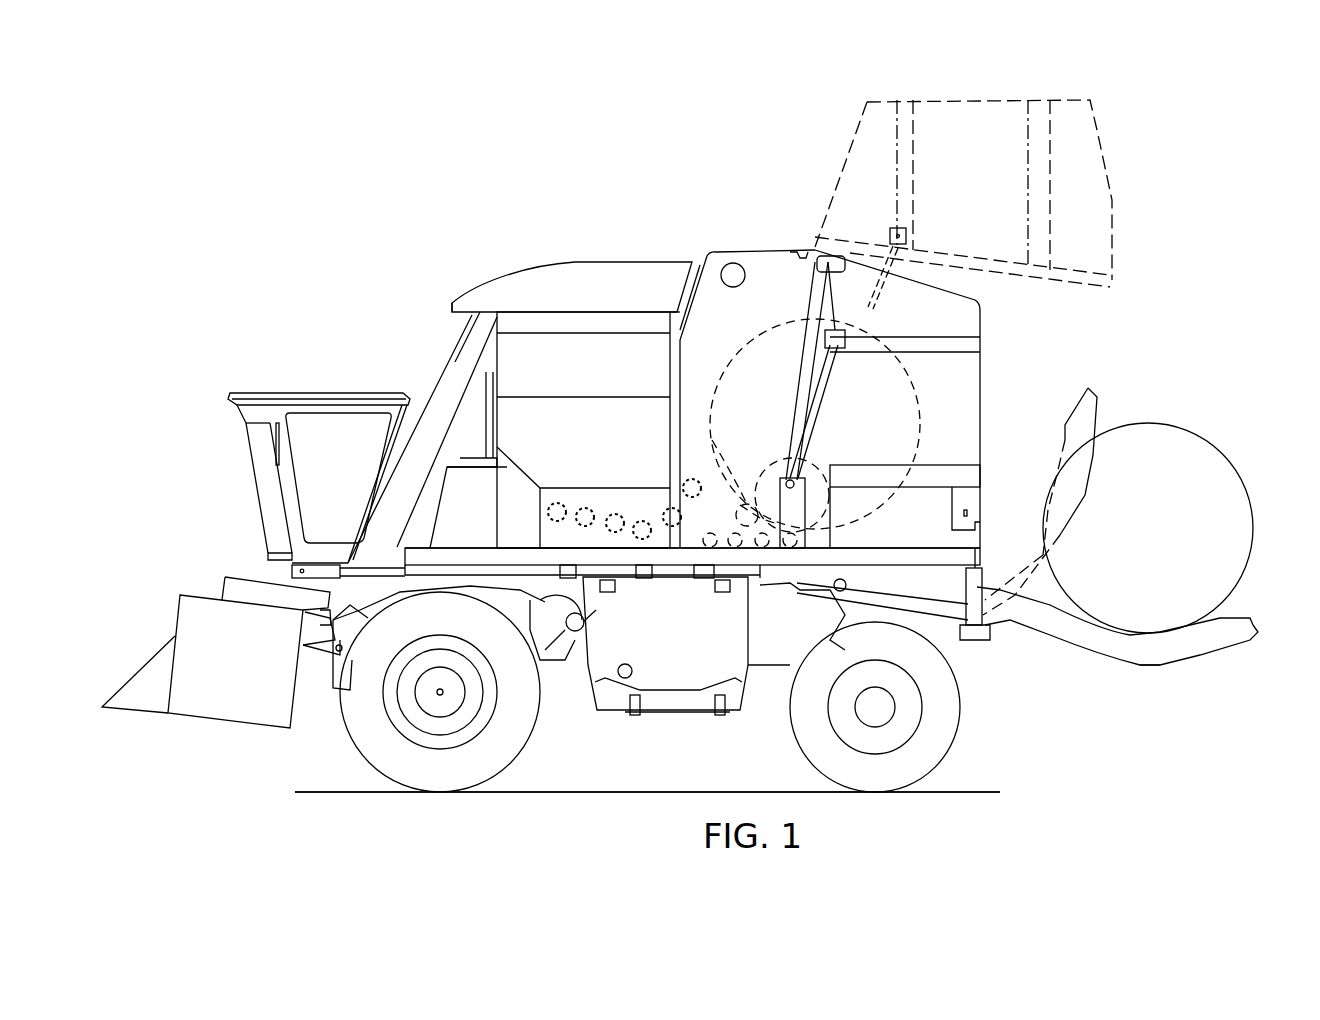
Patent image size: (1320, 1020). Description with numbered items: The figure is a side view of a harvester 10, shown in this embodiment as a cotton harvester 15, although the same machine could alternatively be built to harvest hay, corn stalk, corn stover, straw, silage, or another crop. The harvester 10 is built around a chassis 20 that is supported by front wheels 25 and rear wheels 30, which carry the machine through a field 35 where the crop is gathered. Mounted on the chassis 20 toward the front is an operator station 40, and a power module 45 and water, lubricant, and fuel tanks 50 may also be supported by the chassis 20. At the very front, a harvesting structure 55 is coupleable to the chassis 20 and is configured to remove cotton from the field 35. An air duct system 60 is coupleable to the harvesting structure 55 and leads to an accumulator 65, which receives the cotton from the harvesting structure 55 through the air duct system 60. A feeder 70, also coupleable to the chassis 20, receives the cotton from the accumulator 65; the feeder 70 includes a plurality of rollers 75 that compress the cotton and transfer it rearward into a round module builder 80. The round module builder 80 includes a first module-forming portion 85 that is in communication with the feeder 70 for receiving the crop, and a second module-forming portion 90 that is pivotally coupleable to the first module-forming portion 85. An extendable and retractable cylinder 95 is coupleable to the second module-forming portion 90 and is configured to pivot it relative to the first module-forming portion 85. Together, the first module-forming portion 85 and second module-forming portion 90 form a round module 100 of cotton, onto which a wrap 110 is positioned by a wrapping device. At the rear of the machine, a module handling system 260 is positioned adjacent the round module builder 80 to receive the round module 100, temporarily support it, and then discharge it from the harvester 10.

The harvester 10 is at (232, 200).
The cotton harvester 15 is at (316, 345).
The chassis 20 is at (463, 565).
The front wheels 25 is at (518, 733).
The rear wheels 30 is at (955, 725).
The field 35 is at (578, 792).
The operator station 40 is at (273, 390).
The power module 45 is at (685, 680).
The water, lubricant, and fuel tanks 50 is at (505, 487).
The harvesting structure 55 is at (208, 712).
The air duct system 60 is at (467, 338).
The accumulator 65 is at (537, 355).
The feeder 70 is at (580, 490).
The rollers 75 is at (565, 527).
The round module builder 80 is at (703, 190).
The first module-forming portion 85 is at (774, 265).
The second module-forming portion 90 is at (967, 385).
The extendable and retractable cylinder 95 is at (833, 370).
The round module 100 is at (1148, 390).
The wrap 110 is at (1182, 423).
The module handling system 260 is at (1150, 652).